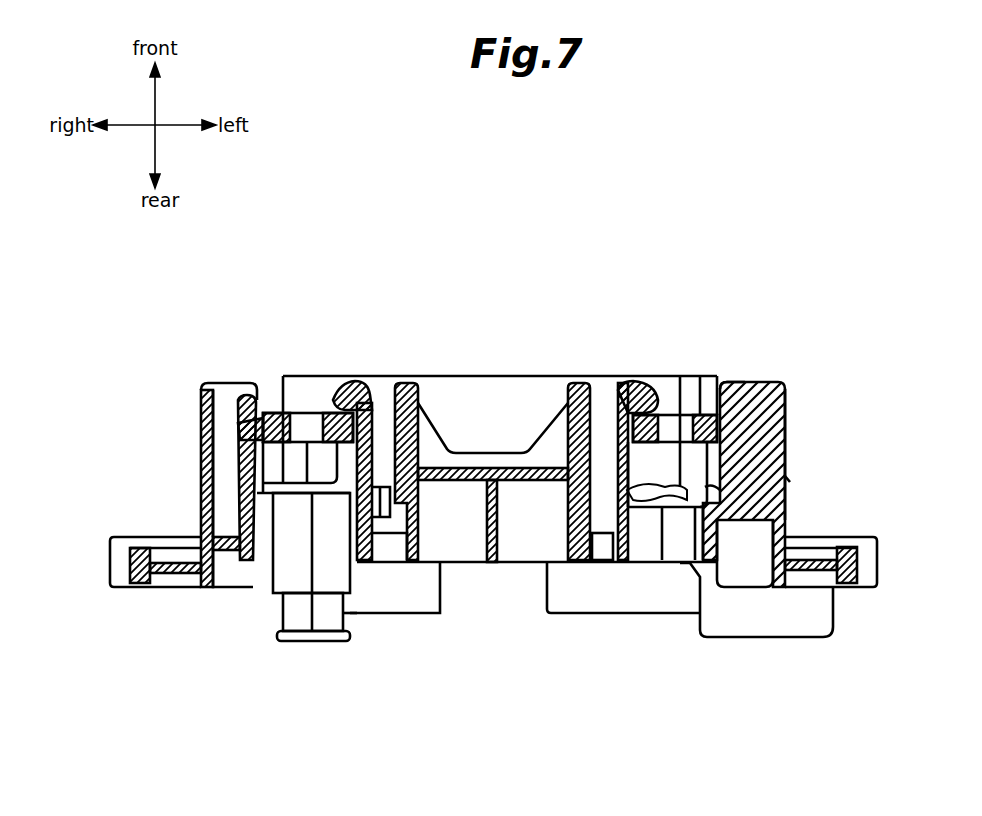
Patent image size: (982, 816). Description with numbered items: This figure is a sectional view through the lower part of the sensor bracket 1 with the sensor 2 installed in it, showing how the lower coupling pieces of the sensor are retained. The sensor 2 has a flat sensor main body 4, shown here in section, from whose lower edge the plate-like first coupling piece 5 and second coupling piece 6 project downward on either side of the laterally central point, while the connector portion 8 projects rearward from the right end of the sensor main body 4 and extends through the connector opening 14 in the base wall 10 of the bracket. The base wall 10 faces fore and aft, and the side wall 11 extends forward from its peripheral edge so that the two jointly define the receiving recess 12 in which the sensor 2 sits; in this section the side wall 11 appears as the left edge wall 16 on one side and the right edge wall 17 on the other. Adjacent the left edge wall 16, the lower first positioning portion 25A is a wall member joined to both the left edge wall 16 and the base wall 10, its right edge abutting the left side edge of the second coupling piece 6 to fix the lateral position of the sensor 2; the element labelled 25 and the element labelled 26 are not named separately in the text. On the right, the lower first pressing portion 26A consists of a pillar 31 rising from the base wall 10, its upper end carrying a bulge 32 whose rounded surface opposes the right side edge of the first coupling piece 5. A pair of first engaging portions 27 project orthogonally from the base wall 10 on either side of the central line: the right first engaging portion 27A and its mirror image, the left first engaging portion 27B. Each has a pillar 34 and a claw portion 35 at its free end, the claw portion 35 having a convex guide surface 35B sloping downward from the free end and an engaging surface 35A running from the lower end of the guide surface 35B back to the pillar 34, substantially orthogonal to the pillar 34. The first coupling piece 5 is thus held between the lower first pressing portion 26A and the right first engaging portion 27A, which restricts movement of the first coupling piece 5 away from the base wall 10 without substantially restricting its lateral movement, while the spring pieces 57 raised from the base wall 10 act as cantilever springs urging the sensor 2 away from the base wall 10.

The sensor bracket 1 is at (171, 330).
The sensor 2 is at (507, 372).
The sensor main body 4 is at (457, 383).
The first coupling piece 5 is at (286, 415).
The second coupling piece 6 is at (717, 415).
The connector portion 8 is at (330, 623).
The base wall 10 is at (600, 535).
The side wall 11 is at (785, 384).
The receiving recess 12 is at (787, 480).
The connector opening 14 is at (262, 548).
The left edge wall 16 is at (777, 440).
The right edge wall 17 is at (207, 487).
The side block 25 is at (757, 378).
The lower first positioning portion 25A is at (733, 383).
The inner wall 26 is at (240, 398).
The lower first pressing portion 26A is at (240, 398).
The first engaging portions 27 is at (365, 372).
The right first engaging portion 27A is at (347, 393).
The left first engaging portion 27B is at (633, 387).
The pillar 31 is at (243, 467).
The bulge 32 is at (256, 420).
The pillar 34 is at (387, 540).
The claw portion 35 is at (310, 413).
The engaging surface 35A is at (339, 412).
The guide surface 35B is at (322, 400).
The spring pieces 57 is at (660, 500).